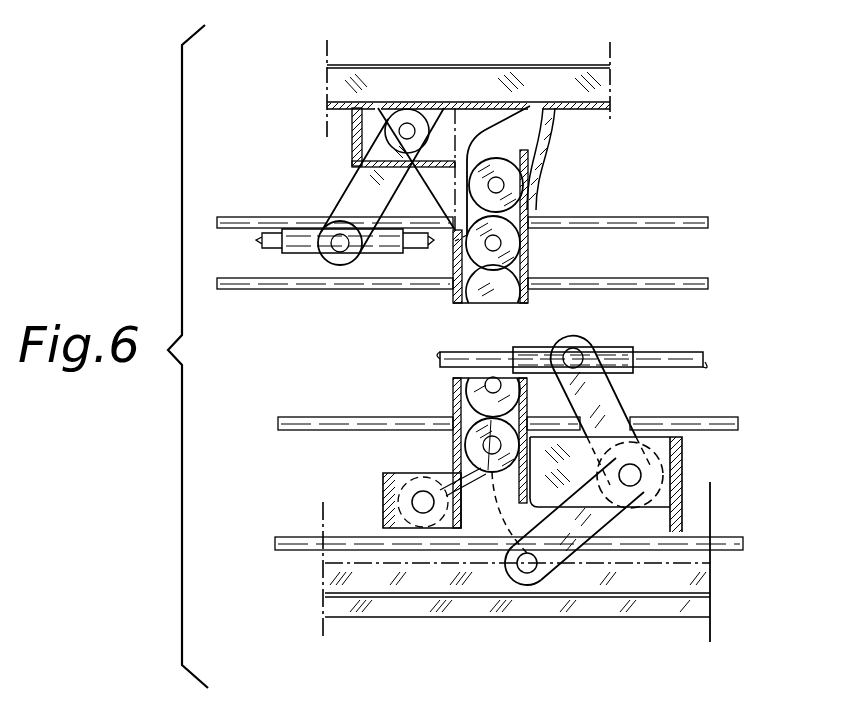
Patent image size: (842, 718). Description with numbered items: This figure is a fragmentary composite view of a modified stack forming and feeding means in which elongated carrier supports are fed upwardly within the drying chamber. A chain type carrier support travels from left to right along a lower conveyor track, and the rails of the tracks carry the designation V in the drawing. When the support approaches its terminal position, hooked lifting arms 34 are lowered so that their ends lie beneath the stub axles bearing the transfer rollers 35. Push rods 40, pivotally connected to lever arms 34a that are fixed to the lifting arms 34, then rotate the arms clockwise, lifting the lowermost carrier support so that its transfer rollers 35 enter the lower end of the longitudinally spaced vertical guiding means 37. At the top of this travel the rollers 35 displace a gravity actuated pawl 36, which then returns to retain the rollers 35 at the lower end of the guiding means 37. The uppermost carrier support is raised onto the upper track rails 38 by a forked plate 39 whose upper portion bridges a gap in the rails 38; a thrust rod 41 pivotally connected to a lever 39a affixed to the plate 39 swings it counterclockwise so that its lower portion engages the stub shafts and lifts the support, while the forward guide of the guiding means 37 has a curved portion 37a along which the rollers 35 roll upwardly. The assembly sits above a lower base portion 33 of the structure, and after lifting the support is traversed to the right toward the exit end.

The base plate 33 is at (690, 600).
The hooked lifting arm 34 is at (610, 522).
The lever arm 34a is at (597, 400).
The transfer roller 35 is at (507, 193).
The gravity actuated pawl 36 is at (460, 462).
The vertical guiding means 37 is at (455, 268).
The curved portion 37a is at (550, 127).
The upper track rail 38 is at (345, 103).
The forked plate 39 is at (483, 133).
The lever 39a is at (353, 193).
The push rod 40 is at (643, 357).
The thrust rod 41 is at (270, 243).
The rails V is at (708, 222).